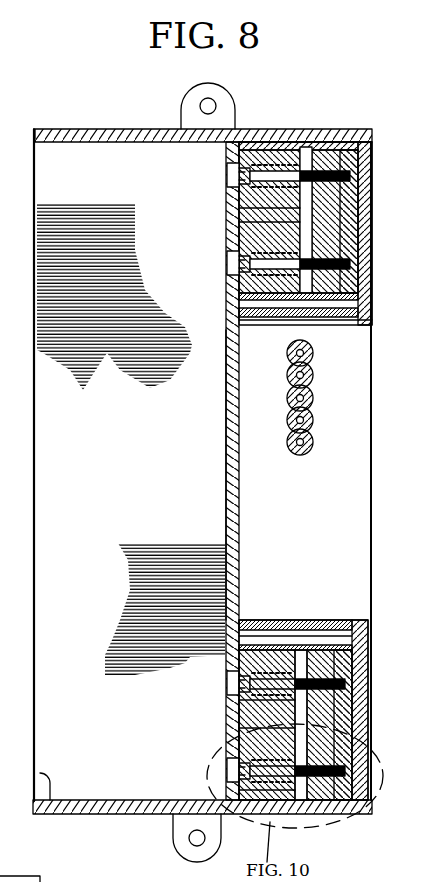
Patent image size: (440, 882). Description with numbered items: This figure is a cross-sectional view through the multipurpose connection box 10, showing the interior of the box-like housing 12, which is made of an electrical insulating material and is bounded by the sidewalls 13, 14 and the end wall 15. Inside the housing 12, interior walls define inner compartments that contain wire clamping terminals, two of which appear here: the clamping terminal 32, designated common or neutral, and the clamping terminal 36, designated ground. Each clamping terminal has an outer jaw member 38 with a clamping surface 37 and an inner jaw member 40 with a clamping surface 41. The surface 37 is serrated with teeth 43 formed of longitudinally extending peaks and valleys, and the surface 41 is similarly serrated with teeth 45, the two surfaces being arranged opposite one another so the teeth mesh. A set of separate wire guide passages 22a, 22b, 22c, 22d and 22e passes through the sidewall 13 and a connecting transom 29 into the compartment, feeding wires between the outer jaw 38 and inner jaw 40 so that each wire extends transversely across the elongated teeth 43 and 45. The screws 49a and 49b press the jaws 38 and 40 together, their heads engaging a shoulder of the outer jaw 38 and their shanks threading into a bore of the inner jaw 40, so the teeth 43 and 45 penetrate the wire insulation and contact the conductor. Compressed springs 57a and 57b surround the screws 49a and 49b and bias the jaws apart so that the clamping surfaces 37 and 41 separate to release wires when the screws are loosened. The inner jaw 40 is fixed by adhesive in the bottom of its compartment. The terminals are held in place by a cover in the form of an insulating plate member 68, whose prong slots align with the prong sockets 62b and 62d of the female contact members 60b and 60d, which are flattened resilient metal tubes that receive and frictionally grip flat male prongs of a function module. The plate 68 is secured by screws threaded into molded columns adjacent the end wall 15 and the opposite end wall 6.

The multipurpose connection box 10 is at (288, 104).
The housing 12 is at (252, 126).
The sidewall 13 is at (181, 439).
The sidewall 14 is at (62, 880).
The end wall 15 is at (82, 129).
The corner wall 6 is at (40, 773).
The wire guide passage 22a is at (287, 353).
The wire guide passage 22b is at (287, 375).
The wire guide passage 22c is at (287, 398).
The wire guide passage 22d is at (287, 420).
The wire guide passage 22e is at (287, 442).
The connecting transom 29 is at (241, 430).
The clamping terminal 32 is at (212, 182).
The clamping terminal 36 is at (186, 748).
The clamping surface 37 is at (228, 208).
The outer jaw member 38 is at (228, 222).
The inner jaw member 40 is at (360, 258).
The clamping surface 41 is at (352, 192).
The teeth 43 is at (303, 142).
The teeth 45 is at (338, 142).
The screw 49a is at (218, 172).
The screw 49b is at (218, 262).
The compressed spring 57a is at (228, 700).
The compressed spring 57b is at (228, 790).
The female contact member 60b is at (236, 336).
The female contact member 60d is at (320, 620).
The prong socket 62b is at (232, 300).
The prong socket 62d is at (270, 620).
The plate member 68 is at (216, 525).